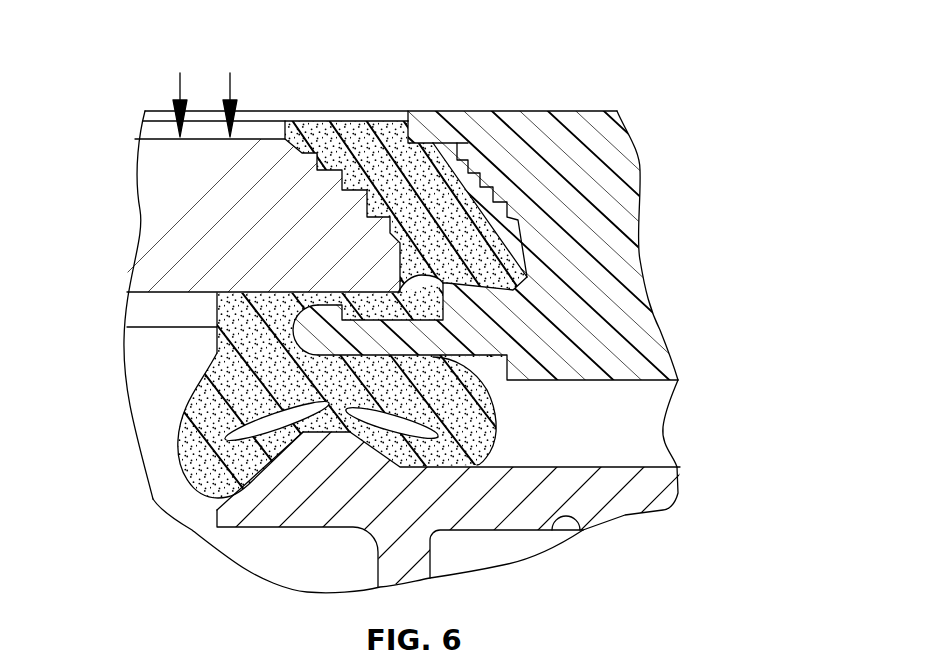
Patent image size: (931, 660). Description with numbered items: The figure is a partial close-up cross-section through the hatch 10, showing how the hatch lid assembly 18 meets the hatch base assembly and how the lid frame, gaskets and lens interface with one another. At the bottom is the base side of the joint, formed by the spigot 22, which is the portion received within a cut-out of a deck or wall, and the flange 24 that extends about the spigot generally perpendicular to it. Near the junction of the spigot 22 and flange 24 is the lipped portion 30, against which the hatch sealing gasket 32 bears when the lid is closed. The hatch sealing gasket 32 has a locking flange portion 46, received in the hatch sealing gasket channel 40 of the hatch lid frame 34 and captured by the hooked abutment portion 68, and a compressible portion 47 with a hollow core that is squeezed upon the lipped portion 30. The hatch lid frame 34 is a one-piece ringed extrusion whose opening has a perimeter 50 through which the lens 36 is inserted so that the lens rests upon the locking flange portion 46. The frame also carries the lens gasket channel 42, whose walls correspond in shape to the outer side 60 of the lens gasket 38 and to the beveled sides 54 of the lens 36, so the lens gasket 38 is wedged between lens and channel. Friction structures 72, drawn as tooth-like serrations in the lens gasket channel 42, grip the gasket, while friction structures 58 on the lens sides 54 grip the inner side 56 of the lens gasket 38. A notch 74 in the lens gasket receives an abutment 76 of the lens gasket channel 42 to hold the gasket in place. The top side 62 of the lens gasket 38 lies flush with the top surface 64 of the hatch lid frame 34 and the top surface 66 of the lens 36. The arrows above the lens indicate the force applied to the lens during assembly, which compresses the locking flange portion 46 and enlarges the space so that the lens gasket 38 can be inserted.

The hatch 10 is at (750, 88).
The hatch lid assembly 18 is at (683, 67).
The spigot 22 is at (417, 567).
The flange 24 is at (596, 485).
The lipped portion 30 is at (304, 483).
The hatch sealing gasket 32 is at (245, 357).
The hatch lid frame 34 is at (603, 273).
The lens 36 is at (197, 195).
The lens gasket 38 is at (500, 167).
The hatch sealing gasket channel 40 is at (400, 292).
The lens gasket channel 42 is at (505, 172).
The locking flange portion 46 is at (307, 332).
The compressible portion 47 is at (200, 444).
The perimeter 50 is at (433, 143).
The sides 54 is at (390, 160).
The inner side 56 is at (420, 273).
The friction structures 58 is at (317, 162).
The outer side 60 is at (505, 212).
The top side 62 is at (312, 130).
The top surface 64 is at (597, 111).
The top surface 66 is at (150, 140).
The hooked abutment portion 68 is at (303, 333).
The friction structures 72 is at (497, 182).
The notch 74 is at (395, 147).
The abutment 76 is at (497, 145).